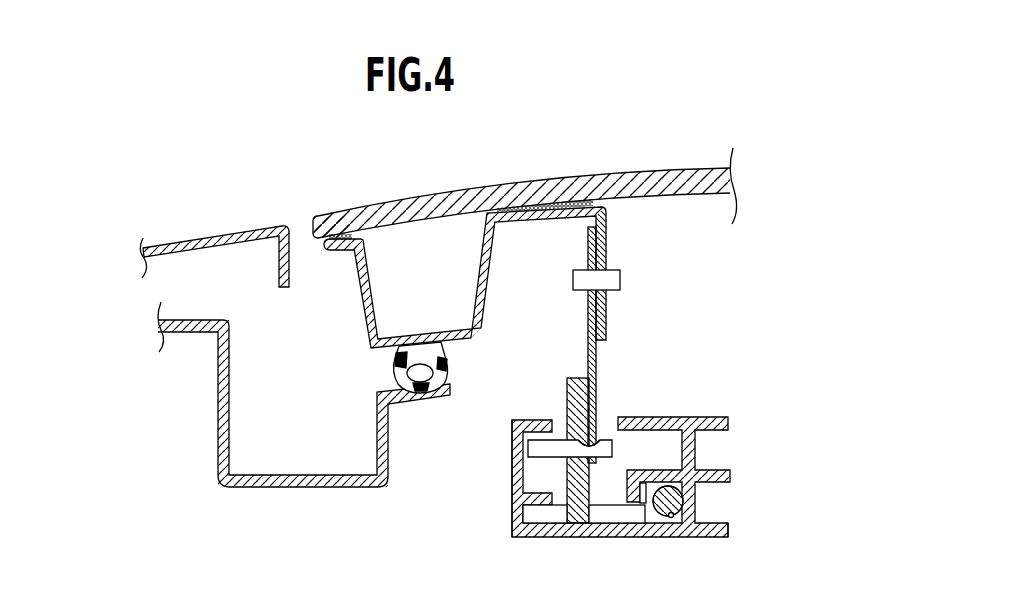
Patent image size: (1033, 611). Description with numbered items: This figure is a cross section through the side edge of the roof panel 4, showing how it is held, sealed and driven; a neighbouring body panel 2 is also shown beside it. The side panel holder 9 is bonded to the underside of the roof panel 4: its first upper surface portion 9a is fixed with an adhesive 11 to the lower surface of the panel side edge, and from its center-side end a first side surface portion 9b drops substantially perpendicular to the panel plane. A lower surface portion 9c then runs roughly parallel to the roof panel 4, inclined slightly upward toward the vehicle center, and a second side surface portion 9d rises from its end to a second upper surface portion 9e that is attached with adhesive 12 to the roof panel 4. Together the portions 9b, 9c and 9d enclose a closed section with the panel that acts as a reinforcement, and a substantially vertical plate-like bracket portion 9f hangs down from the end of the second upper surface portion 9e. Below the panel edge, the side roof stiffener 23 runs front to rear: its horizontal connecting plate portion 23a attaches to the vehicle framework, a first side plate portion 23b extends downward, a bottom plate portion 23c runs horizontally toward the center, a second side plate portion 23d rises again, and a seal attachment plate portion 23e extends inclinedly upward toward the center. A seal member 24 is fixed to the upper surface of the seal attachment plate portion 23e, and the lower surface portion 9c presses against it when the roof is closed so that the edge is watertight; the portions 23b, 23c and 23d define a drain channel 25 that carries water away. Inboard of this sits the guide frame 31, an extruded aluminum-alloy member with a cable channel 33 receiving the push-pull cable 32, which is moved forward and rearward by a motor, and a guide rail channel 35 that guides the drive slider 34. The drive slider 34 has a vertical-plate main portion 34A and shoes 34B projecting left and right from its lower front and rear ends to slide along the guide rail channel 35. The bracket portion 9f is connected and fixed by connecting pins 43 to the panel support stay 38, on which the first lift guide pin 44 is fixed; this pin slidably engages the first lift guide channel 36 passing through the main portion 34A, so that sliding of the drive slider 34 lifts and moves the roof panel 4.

The side panel 2 is at (230, 233).
The roof panel 4 is at (525, 176).
The side panel holder 9 is at (465, 238).
The first upper surface portion 9a is at (336, 258).
The first side surface portion 9b is at (362, 303).
The lower surface portion 9c is at (424, 333).
The second side surface portion 9d is at (485, 273).
The second upper surface portion 9e is at (556, 206).
The bracket portion 9f is at (606, 244).
The adhesive 11 is at (343, 218).
The adhesive 12 is at (527, 207).
The side roof stiffener 23 is at (299, 424).
The connecting plate portion 23a is at (185, 333).
The first side plate portion 23b is at (218, 427).
The bottom plate portion 23c is at (287, 488).
The second side plate portion 23d is at (377, 433).
The seal attachment plate portion 23e is at (415, 402).
The seal member 24 is at (392, 368).
The drain channel 25 is at (283, 455).
The guide frame 31 is at (579, 500).
The push-pull cable 32 is at (686, 500).
The cable channel 33 is at (675, 525).
The drive slider 34 is at (568, 440).
The main portion 34A is at (567, 387).
The shoes 34B is at (545, 520).
The guide rail channel 35 is at (529, 519).
The first lift guide channel 36 is at (602, 437).
The panel support stay 38 is at (603, 358).
The connecting pins 43 is at (620, 279).
The first lift guide pin 44 is at (537, 450).